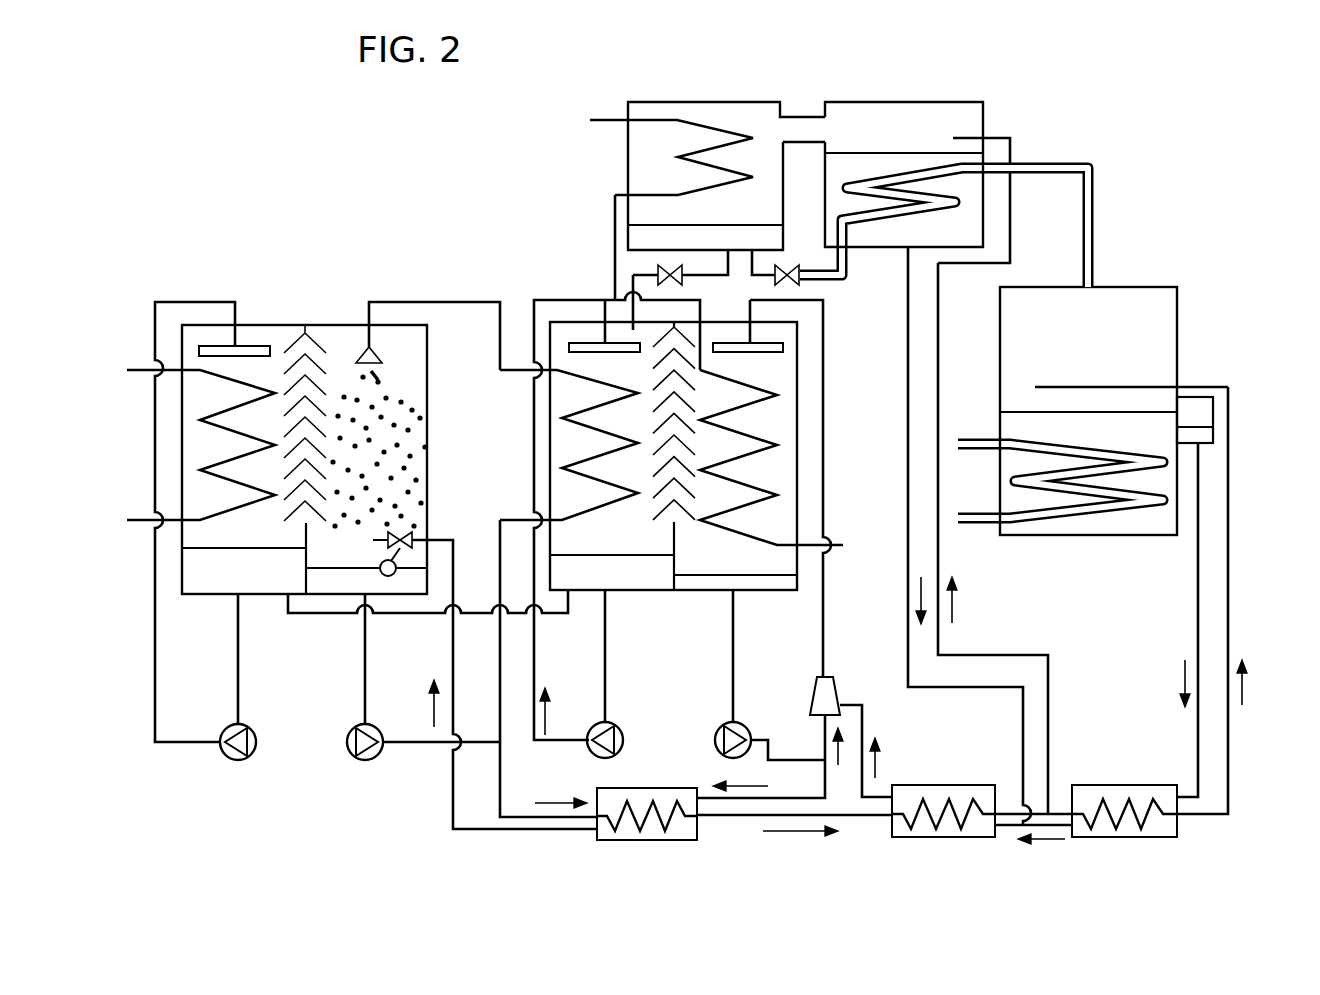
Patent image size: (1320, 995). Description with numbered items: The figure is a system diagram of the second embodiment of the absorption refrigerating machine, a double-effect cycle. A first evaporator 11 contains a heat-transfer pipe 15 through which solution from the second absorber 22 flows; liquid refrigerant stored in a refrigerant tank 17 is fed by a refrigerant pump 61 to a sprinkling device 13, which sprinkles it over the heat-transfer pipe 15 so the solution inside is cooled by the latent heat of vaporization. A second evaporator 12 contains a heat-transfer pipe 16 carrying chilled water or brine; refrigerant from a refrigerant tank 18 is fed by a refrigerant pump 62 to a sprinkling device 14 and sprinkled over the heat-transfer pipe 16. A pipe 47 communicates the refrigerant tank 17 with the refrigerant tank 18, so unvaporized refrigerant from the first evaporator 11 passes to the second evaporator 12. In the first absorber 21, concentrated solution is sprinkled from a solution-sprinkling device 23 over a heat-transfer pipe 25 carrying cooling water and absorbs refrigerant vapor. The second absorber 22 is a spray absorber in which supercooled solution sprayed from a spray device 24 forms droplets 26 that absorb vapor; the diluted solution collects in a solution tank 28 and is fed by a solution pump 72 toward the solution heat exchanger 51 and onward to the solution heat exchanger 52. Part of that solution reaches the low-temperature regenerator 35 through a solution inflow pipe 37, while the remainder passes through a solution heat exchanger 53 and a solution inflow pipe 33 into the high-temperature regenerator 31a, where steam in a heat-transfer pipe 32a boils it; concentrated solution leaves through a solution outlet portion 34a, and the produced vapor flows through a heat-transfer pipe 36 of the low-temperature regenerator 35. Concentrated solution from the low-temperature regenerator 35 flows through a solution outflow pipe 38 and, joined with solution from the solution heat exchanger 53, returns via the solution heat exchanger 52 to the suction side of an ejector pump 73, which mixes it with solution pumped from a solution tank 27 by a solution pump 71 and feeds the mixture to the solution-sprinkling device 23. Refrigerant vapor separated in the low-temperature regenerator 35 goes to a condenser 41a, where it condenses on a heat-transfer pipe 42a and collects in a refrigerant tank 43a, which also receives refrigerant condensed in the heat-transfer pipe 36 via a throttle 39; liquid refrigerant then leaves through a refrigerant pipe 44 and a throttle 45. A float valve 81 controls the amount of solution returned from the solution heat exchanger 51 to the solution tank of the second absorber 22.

The first evaporator 11 is at (550, 322).
The second evaporator 12 is at (190, 337).
The sprinkling device 13 is at (588, 340).
The sprinkling device 14 is at (215, 345).
The heat-transfer pipe 15 is at (588, 453).
The heat-transfer pipe 16 is at (228, 457).
The refrigerant tank 17 is at (632, 578).
The refrigerant tank 18 is at (264, 585).
The first absorber 21 is at (780, 332).
The second absorber 22 is at (338, 333).
The solution-sprinkling device 23 is at (787, 346).
The spray device 24 is at (378, 343).
The heat-transfer pipe 25 is at (757, 428).
The droplets 26 is at (382, 420).
The solution tank 27 is at (766, 584).
The solution tank 28 is at (400, 585).
The high-temperature regenerator 31a is at (1133, 303).
The heat-transfer pipe 32a is at (1092, 493).
The solution inflow pipe 33 is at (1192, 383).
The solution outlet portion 34a is at (1210, 413).
The low-temperature regenerator 35 is at (968, 113).
The heat-transfer pipe 36 is at (922, 170).
The solution inflow pipe 37 is at (1015, 148).
The solution outflow pipe 38 is at (908, 600).
The throttle 39 is at (797, 262).
The condenser 41a is at (766, 113).
The heat-transfer pipe 42a is at (704, 268).
The refrigerant tank 43a is at (737, 237).
The refrigerant pipe 44 is at (660, 267).
The throttle 45 is at (655, 255).
The pipe 47 is at (560, 616).
The solution heat exchanger 51 is at (650, 836).
The solution heat exchanger 52 is at (948, 838).
The solution heat exchanger 53 is at (1158, 838).
The refrigerant pump 61 is at (624, 735).
The refrigerant pump 62 is at (237, 765).
The solution pump 71 is at (752, 737).
The solution pump 72 is at (362, 765).
The ejector pump 73 is at (837, 695).
The float valve 81 is at (404, 535).